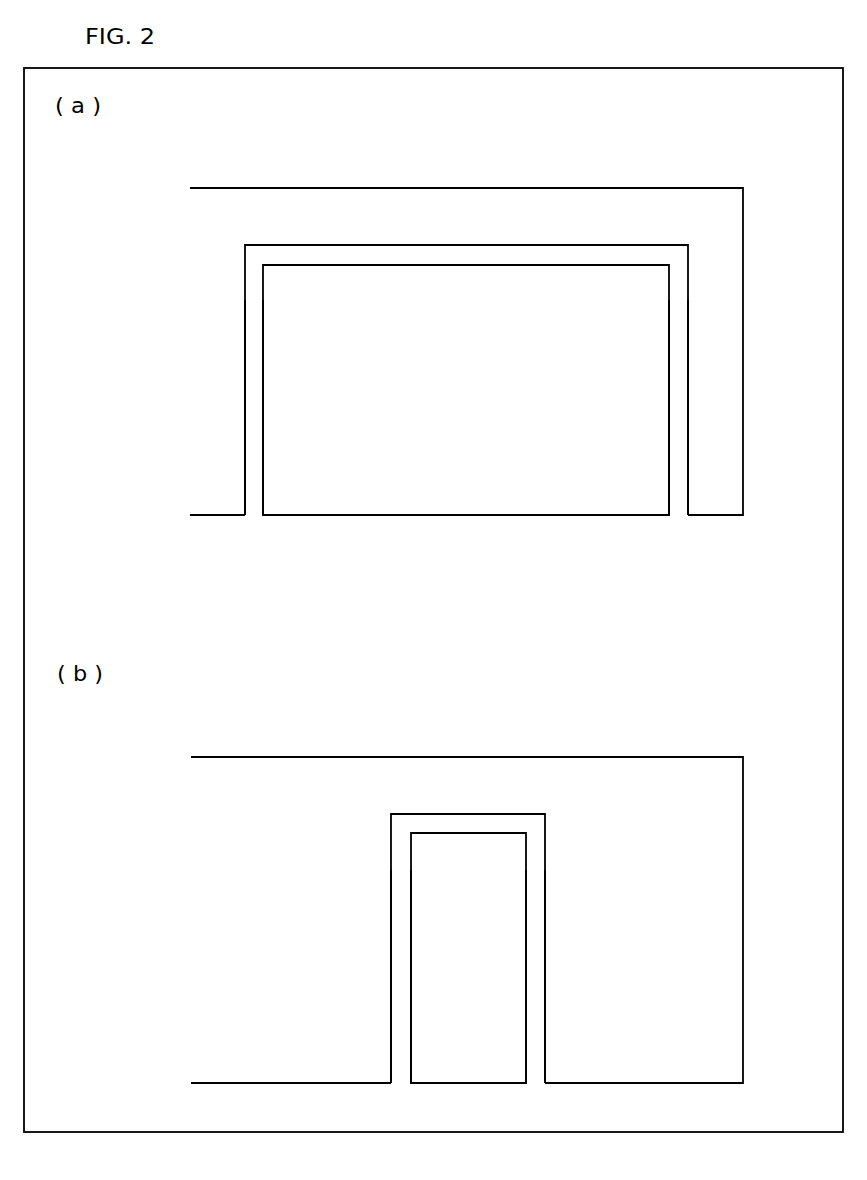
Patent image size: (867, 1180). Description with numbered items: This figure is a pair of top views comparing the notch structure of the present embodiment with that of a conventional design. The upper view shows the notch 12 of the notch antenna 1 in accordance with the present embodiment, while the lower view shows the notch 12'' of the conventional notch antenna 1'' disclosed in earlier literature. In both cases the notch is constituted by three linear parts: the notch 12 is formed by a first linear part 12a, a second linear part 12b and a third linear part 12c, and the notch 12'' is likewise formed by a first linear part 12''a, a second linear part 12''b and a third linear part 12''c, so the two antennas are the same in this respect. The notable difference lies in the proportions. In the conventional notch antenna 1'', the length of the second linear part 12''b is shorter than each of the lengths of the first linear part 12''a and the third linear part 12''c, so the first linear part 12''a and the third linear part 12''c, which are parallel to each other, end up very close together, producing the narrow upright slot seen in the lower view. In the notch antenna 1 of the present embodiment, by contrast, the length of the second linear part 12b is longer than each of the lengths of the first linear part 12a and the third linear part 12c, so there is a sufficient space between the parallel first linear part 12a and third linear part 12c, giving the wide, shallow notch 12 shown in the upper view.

The notch antenna 1 is at (500, 307).
The notch 12 is at (466, 328).
The first linear part 12a is at (262, 375).
The second linear part 12b is at (413, 257).
The third linear part 12c is at (673, 372).
The conventional notch antenna 1'' is at (503, 875).
The notch of the conventional notch antenna 12'' is at (468, 895).
The first linear part of the conventional notch 12''a is at (365, 976).
The second linear part of the conventional notch 12''b is at (462, 799).
The third linear part of the conventional notch 12''c is at (571, 976).